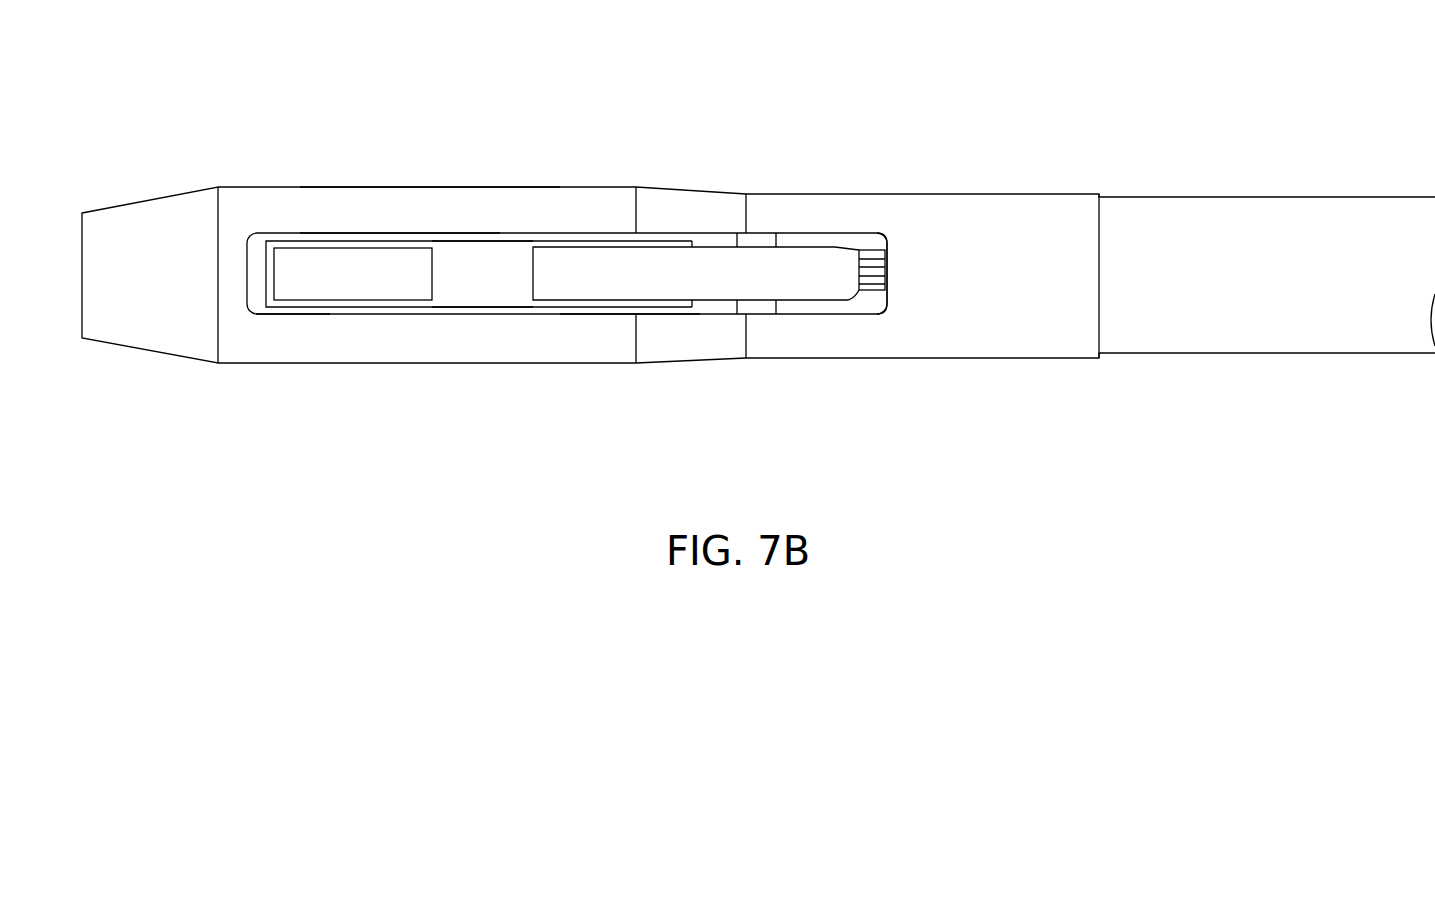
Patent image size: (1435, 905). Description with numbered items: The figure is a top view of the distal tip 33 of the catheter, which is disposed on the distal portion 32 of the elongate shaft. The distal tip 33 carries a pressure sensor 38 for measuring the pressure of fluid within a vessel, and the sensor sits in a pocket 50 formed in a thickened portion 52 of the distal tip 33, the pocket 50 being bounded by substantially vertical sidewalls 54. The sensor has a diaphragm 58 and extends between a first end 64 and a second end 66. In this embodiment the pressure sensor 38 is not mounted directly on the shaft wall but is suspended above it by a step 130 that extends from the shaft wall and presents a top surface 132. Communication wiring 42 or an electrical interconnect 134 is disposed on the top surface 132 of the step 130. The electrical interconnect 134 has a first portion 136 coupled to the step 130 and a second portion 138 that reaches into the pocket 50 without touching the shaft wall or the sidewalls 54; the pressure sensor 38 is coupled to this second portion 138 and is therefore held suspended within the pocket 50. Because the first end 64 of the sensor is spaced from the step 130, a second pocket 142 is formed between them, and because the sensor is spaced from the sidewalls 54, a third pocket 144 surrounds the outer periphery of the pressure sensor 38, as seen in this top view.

The distal portion 32 is at (1024, 447).
The distal tip 33 is at (415, 120).
The pressure sensor 38 is at (468, 264).
The communication wiring 42 is at (874, 300).
The pocket 50 is at (267, 233).
The thickened portion 52 is at (346, 370).
The sidewall 54 is at (249, 295).
The diaphragm 58 is at (310, 260).
The first end 64 is at (600, 322).
The second end 66 is at (337, 228).
The step 130 is at (758, 308).
The top surface 132 is at (763, 230).
The electrical interconnect 134 is at (702, 262).
The first portion 136 is at (842, 264).
The second portion 138 is at (572, 254).
The second pocket 142 is at (707, 318).
The third pocket 144 is at (247, 263).